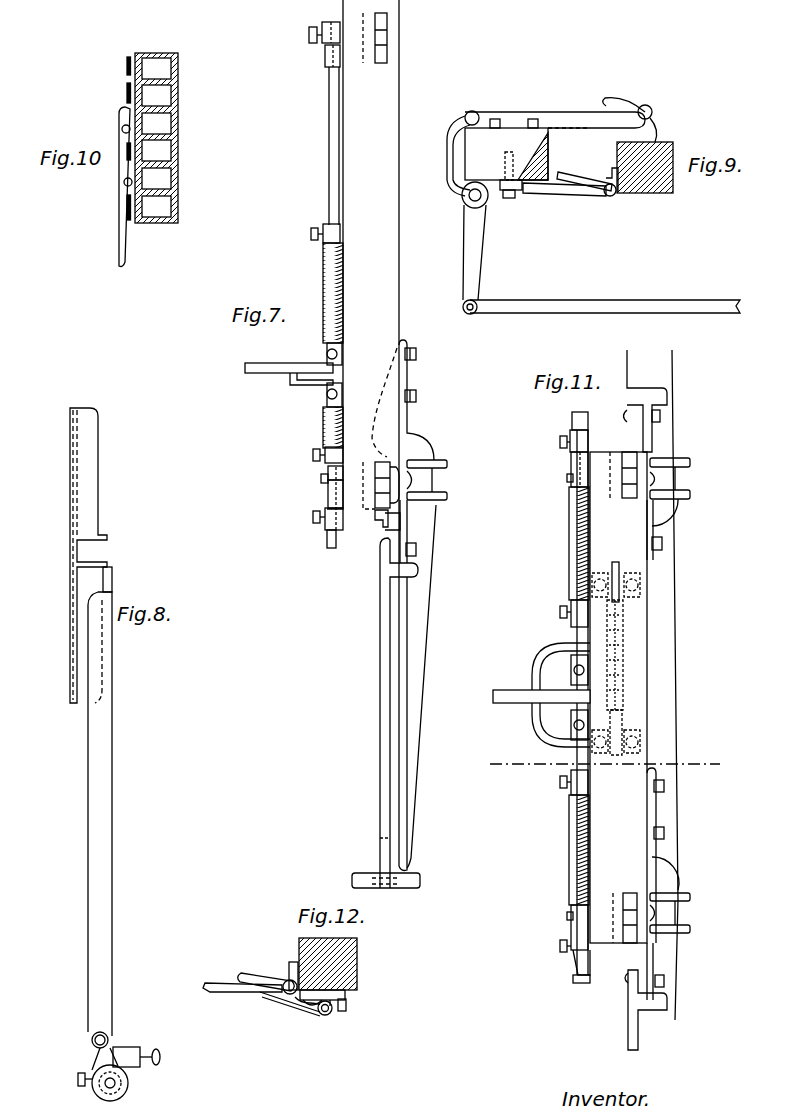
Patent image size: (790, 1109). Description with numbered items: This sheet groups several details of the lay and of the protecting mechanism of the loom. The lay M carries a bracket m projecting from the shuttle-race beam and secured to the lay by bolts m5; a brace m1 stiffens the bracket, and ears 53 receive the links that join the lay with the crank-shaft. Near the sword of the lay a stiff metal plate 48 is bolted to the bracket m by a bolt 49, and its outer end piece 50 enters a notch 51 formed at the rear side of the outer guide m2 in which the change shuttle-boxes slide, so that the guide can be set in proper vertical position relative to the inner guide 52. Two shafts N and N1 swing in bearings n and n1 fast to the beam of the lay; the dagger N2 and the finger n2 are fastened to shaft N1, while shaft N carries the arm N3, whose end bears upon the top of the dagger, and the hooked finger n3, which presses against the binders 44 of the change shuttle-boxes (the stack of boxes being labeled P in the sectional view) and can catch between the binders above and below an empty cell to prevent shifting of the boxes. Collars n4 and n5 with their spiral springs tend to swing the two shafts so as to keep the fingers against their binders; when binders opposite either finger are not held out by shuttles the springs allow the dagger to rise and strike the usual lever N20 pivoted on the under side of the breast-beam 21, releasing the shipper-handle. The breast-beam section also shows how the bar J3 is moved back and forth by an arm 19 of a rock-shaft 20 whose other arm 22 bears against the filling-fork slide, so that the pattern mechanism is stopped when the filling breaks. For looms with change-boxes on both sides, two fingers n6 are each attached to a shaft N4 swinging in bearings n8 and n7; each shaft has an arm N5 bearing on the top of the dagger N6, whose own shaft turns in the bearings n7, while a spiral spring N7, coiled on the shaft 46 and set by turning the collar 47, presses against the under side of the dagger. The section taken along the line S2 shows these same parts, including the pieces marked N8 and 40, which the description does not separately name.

In FIG. 10, the indicator strip P is at (178, 115).
In FIG. 10, the binders 44 is at (115, 138).
In FIG. 10, the finger n3 is at (127, 162).
In FIG. 7, the finger n3 is at (327, 548).
In FIG. 8, the finger n3 is at (92, 1066).
In FIG. 10, the shaft N is at (124, 184).
In FIG. 7, the shaft N is at (328, 469).
In FIG. 9, the shaft N is at (609, 196).
In FIG. 7, the lay M is at (363, 254).
In FIG. 9, the lay M is at (663, 193).
In FIG. 11, the lay M is at (618, 697).
In FIG. 12, the lay M is at (328, 964).
In FIG. 7, the finger n2 is at (325, 22).
In FIG. 7, the bearing n1 is at (325, 57).
In FIG. 7, the shaft N1 is at (325, 128).
In FIG. 7, the collar n4 is at (340, 236).
In FIG. 8, the collar n4 is at (105, 1085).
In FIG. 7, the shaft N4 is at (333, 345).
In FIG. 11, the shaft N4 is at (568, 535).
In FIG. 12, the shaft N4 is at (287, 974).
In FIG. 7, the dagger N2 is at (266, 366).
In FIG. 9, the dagger N2 is at (564, 198).
In FIG. 7, the arm N3 is at (304, 388).
In FIG. 9, the arm N3 is at (585, 169).
In FIG. 7, the bearing n is at (327, 395).
In FIG. 7, the collar n5 is at (339, 453).
In FIG. 7, the bolts m5 is at (416, 352).
In FIG. 11, the bolts m5 is at (672, 807).
In FIG. 7, the brace m1 is at (416, 451).
In FIG. 8, the brace m1 is at (112, 782).
In FIG. 11, the brace m1 is at (651, 721).
In FIG. 7, the ears 53 is at (447, 463).
In FIG. 11, the ears 53 is at (683, 693).
In FIG. 7, the inner guide 52 is at (380, 524).
In FIG. 7, the bolt 49 is at (416, 549).
In FIG. 7, the metal plate 48 is at (380, 619).
In FIG. 11, the metal plate 48 is at (628, 1022).
In FIG. 7, the bracket m is at (425, 602).
In FIG. 11, the bracket m is at (660, 685).
In FIG. 7, the end piece 50 is at (352, 881).
In FIG. 9, the breast-beam 21 is at (506, 149).
In FIG. 9, the arm 22 is at (447, 135).
In FIG. 9, the rock-shaft 20 is at (464, 198).
In FIG. 9, the arm 19 is at (480, 259).
In FIG. 9, the bar J3 is at (605, 296).
In FIG. 9, the lever N20 is at (503, 198).
In FIG. 8, the outer guide m2 is at (86, 461).
In FIG. 8, the notch 51 is at (100, 550).
In FIG. 11, the collar 47 is at (663, 595).
In FIG. 11, the fingers n6 is at (589, 697).
In FIG. 11, the bearings n8 is at (568, 691).
In FIG. 11, the shaft 46 is at (614, 571).
In FIG. 11, the guide block N8 is at (640, 764).
In FIG. 12, the guide block N8 is at (345, 994).
In FIG. 11, the spiral spring N7 is at (623, 658).
In FIG. 12, the spiral spring N7 is at (283, 999).
In FIG. 11, the arm N5 is at (540, 748).
In FIG. 12, the arm N5 is at (256, 974).
In FIG. 11, the dagger N6 is at (541, 686).
In FIG. 12, the dagger N6 is at (242, 978).
In FIG. 11, the bearings n7 is at (568, 697).
In FIG. 12, the bearings n7 is at (326, 1016).
In FIG. 11, the section line S2 is at (608, 755).
In FIG. 12, the lever 40 is at (318, 1015).